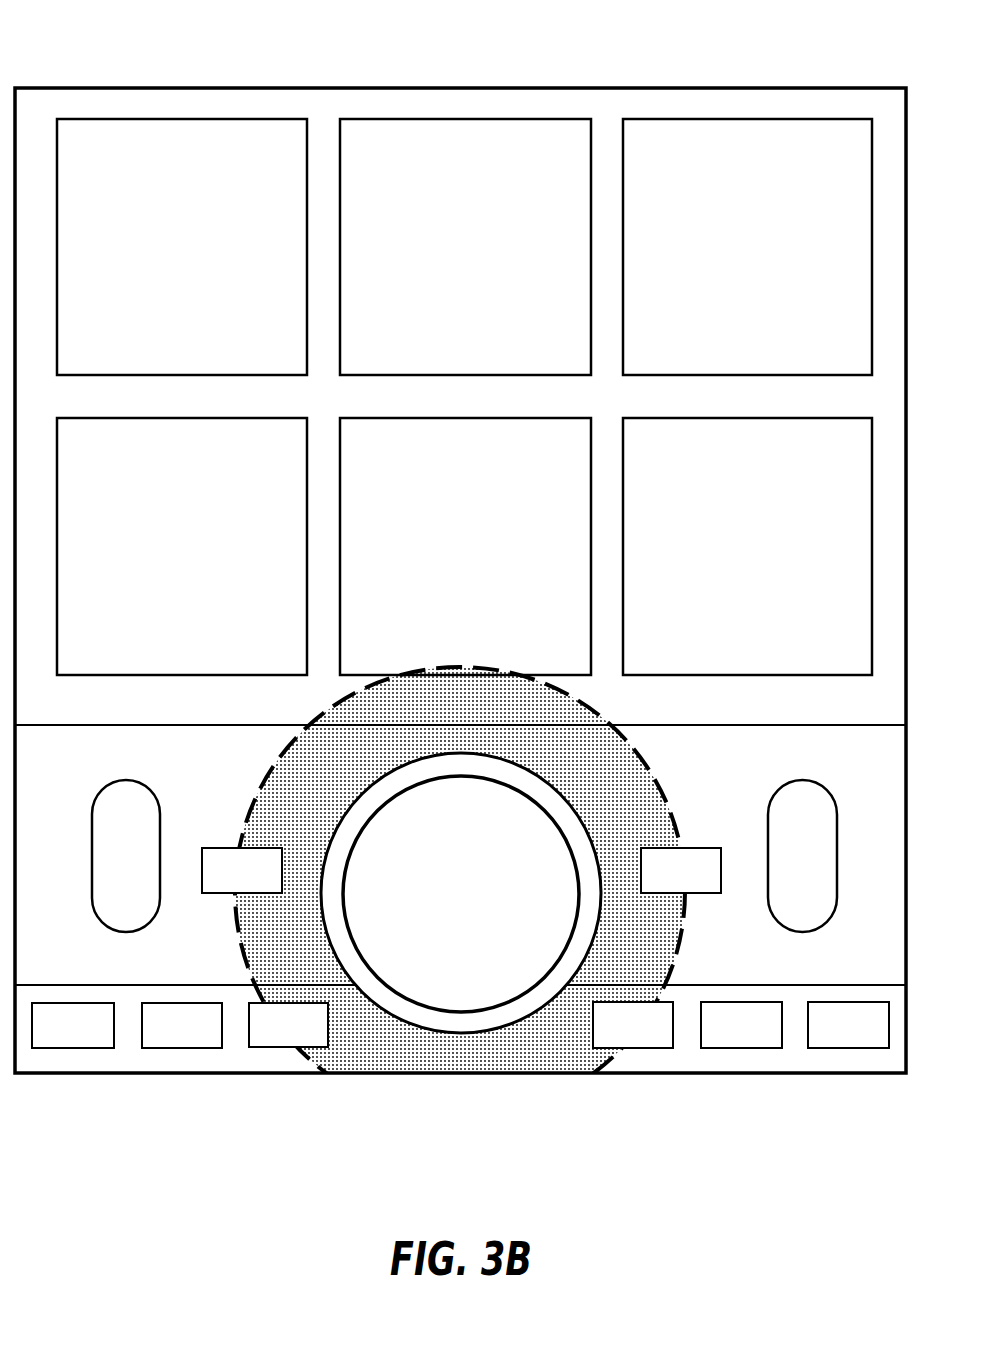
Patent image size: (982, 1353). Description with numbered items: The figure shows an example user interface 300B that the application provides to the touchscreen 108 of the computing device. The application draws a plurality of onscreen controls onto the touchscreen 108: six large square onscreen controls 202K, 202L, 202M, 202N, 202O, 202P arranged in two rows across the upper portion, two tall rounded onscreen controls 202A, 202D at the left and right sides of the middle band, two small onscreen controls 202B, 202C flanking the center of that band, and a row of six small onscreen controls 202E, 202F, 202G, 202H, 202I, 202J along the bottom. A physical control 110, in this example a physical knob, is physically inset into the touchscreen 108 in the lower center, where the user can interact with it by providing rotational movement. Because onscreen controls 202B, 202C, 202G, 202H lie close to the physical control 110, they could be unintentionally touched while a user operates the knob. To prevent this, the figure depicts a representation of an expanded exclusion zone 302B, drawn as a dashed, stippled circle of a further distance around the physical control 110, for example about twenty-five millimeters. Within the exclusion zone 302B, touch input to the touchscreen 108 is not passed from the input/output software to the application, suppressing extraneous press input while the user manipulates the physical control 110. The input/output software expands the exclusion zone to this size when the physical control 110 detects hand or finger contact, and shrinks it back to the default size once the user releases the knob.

The user interface 300B is at (186, 52).
The touchscreen 108 is at (827, 87).
The expanded exclusion zone 302B is at (597, 718).
The physical control 110 is at (585, 817).
The onscreen control 202A is at (150, 869).
The onscreen control 202B is at (265, 883).
The onscreen control 202C is at (704, 883).
The onscreen control 202D is at (826, 869).
The onscreen control 202E is at (96, 1037).
The onscreen control 202F is at (205, 1037).
The onscreen control 202G is at (313, 1037).
The onscreen control 202H is at (657, 1037).
The onscreen control 202I is at (761, 1037).
The onscreen control 202J is at (871, 1037).
The onscreen control 202K is at (208, 259).
The onscreen control 202L is at (489, 259).
The onscreen control 202M is at (775, 259).
The onscreen control 202N is at (208, 559).
The onscreen control 202O is at (490, 559).
The onscreen control 202P is at (773, 559).